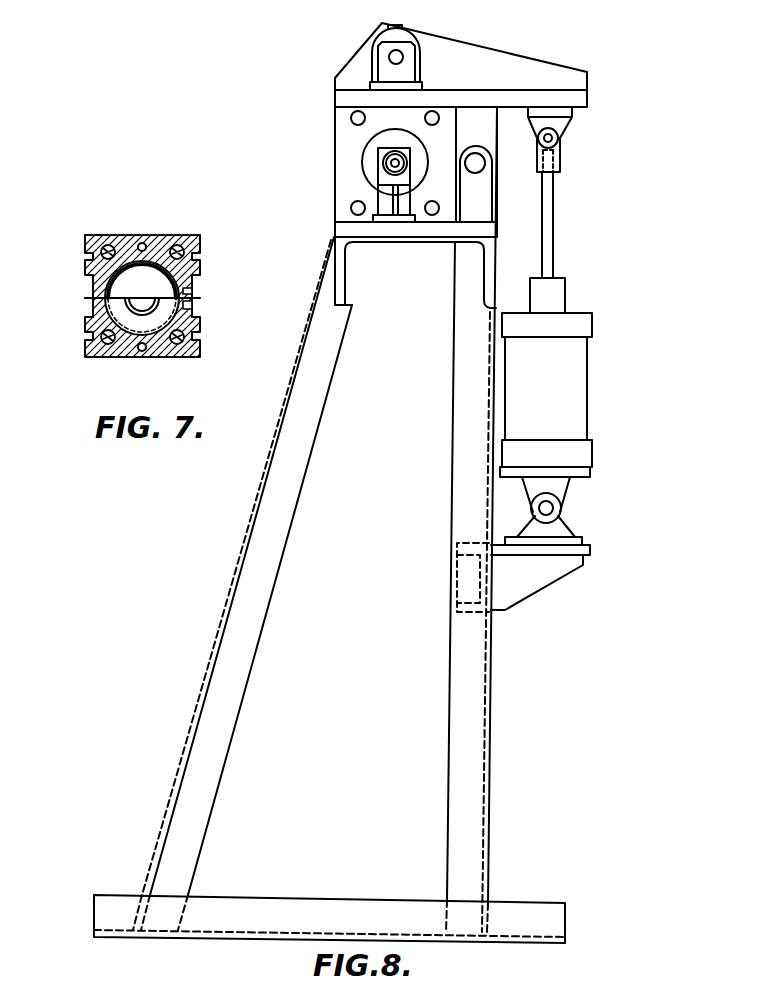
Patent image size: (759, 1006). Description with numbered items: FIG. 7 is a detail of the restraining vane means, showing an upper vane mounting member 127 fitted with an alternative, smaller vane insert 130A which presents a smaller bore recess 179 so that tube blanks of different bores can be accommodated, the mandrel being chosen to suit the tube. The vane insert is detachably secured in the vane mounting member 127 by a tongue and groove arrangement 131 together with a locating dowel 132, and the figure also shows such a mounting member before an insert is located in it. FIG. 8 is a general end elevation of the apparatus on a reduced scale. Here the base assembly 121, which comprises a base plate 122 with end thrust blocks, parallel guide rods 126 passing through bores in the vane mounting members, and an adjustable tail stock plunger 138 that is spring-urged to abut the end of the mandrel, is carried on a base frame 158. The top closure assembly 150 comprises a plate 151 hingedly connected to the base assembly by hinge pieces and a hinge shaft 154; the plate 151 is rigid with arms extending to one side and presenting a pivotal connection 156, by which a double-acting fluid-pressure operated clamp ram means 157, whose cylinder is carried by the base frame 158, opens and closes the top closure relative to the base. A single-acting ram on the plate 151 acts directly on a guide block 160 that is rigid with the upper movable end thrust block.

In FIG. 7, the vane mounting member 127 is at (93, 283).
In FIG. 7, the alternative vane insert 130A is at (120, 313).
In FIG. 7, the smaller bore recess 179 is at (135, 300).
In FIG. 7, the locating dowel 132 is at (188, 292).
In FIG. 7, the tongue and groove arrangement 131 is at (188, 310).
In FIG. 8, the guide block 160 is at (367, 65).
In FIG. 8, the plate 151 is at (345, 98).
In FIG. 8, the top closure assembly 150 is at (333, 120).
In FIG. 8, the adjustable tail stock plunger 138 is at (390, 157).
In FIG. 8, the base assembly 121 is at (335, 183).
In FIG. 8, the base plate 122 is at (345, 228).
In FIG. 8, the guide rods 126 is at (430, 248).
In FIG. 8, the hinge shaft 154 is at (476, 153).
In FIG. 8, the pivotal connection 156 is at (556, 133).
In FIG. 8, the clamp ram means 157 is at (590, 401).
In FIG. 8, the base frame 158 is at (472, 693).